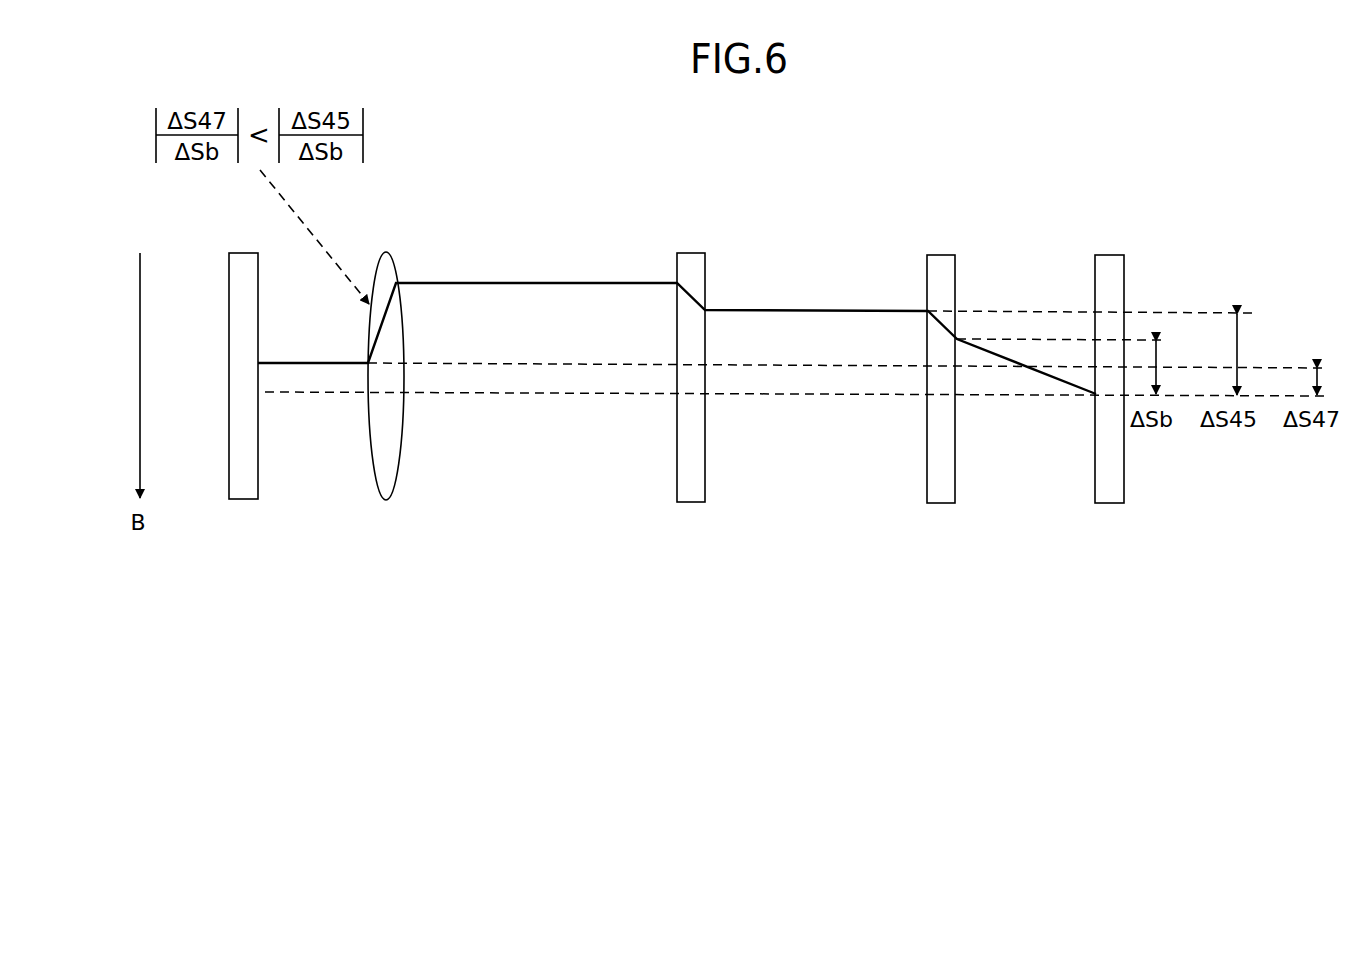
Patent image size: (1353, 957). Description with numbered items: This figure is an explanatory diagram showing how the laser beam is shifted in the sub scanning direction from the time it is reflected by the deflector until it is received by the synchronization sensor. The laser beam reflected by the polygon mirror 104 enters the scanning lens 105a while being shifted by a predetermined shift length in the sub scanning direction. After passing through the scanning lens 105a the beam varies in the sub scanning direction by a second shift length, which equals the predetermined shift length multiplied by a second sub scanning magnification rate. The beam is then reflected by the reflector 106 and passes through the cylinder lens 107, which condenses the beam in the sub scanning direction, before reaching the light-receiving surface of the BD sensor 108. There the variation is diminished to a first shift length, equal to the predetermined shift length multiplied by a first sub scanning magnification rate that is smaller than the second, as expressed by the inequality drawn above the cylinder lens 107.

The polygon mirror 104 is at (1109, 503).
The scanning lens 105a is at (941, 503).
The reflector 106 is at (691, 502).
The cylinder lens 107 is at (386, 500).
The BD sensor 108 is at (243, 499).